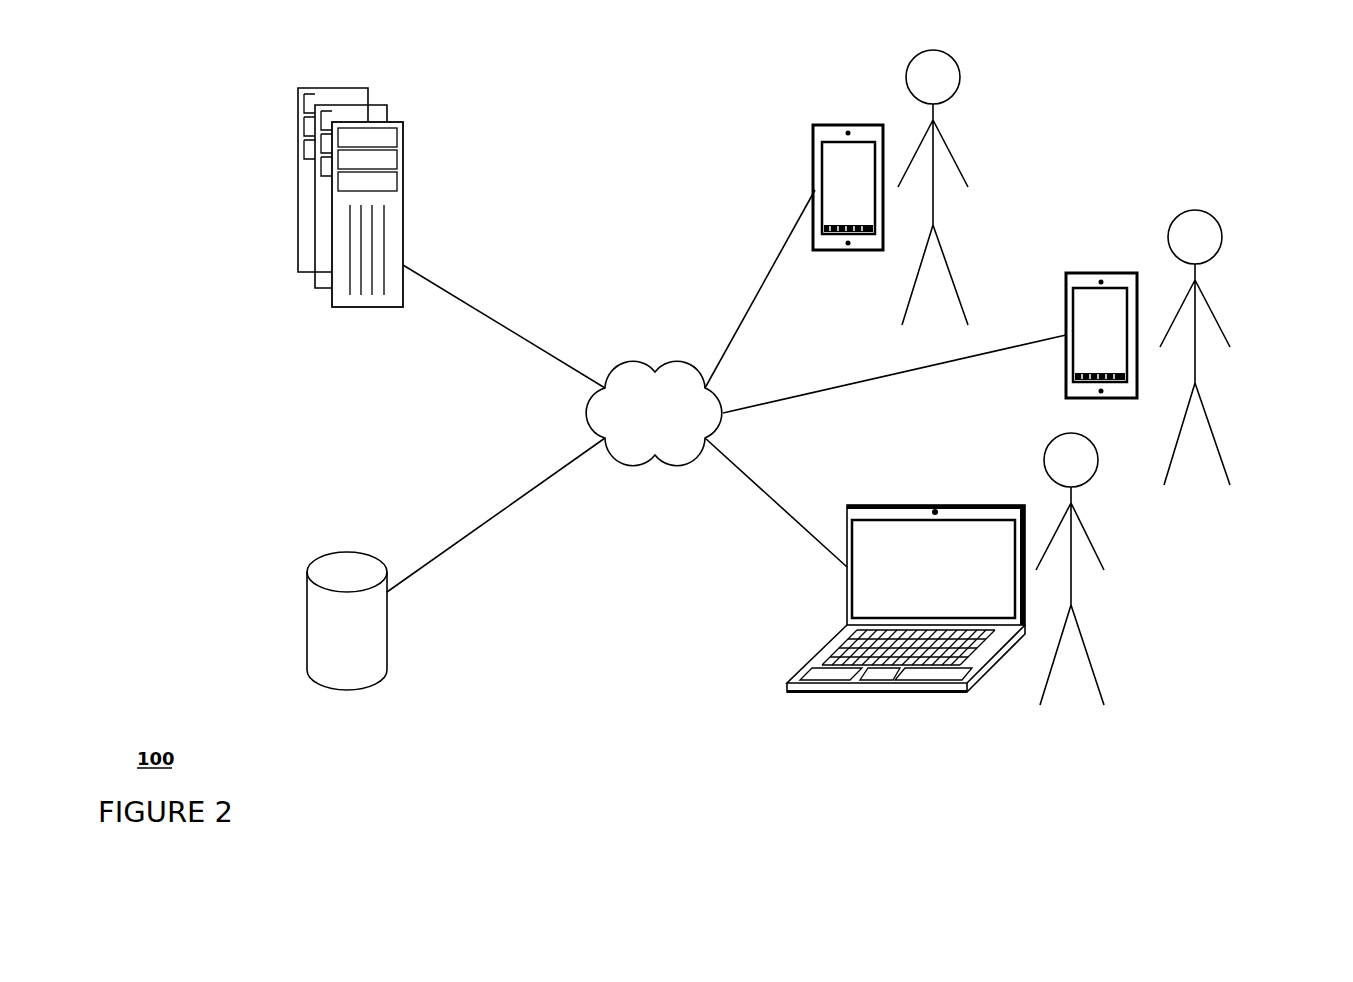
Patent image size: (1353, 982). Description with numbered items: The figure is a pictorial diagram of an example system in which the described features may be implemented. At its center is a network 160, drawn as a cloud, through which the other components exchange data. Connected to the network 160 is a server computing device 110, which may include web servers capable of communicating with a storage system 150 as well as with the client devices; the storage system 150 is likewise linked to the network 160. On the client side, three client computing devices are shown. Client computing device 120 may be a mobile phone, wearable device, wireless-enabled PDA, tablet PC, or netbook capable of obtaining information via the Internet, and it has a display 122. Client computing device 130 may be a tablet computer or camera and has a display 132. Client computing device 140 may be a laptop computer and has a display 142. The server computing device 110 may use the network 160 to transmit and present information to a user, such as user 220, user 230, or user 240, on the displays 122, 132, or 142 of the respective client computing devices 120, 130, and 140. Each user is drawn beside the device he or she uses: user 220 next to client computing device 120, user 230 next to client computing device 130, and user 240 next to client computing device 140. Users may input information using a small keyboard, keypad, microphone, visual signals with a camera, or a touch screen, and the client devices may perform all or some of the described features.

The server computing device 110 is at (403, 163).
The client computing device 120 is at (794, 187).
The display 122 is at (822, 182).
The client computing device 130 is at (1060, 310).
The display 132 is at (1092, 345).
The client computing device 140 is at (882, 599).
The display 142 is at (847, 610).
The storage system 150 is at (387, 638).
The network 160 is at (654, 413).
The user 220 is at (965, 177).
The user 230 is at (1225, 337).
The user 240 is at (1100, 560).